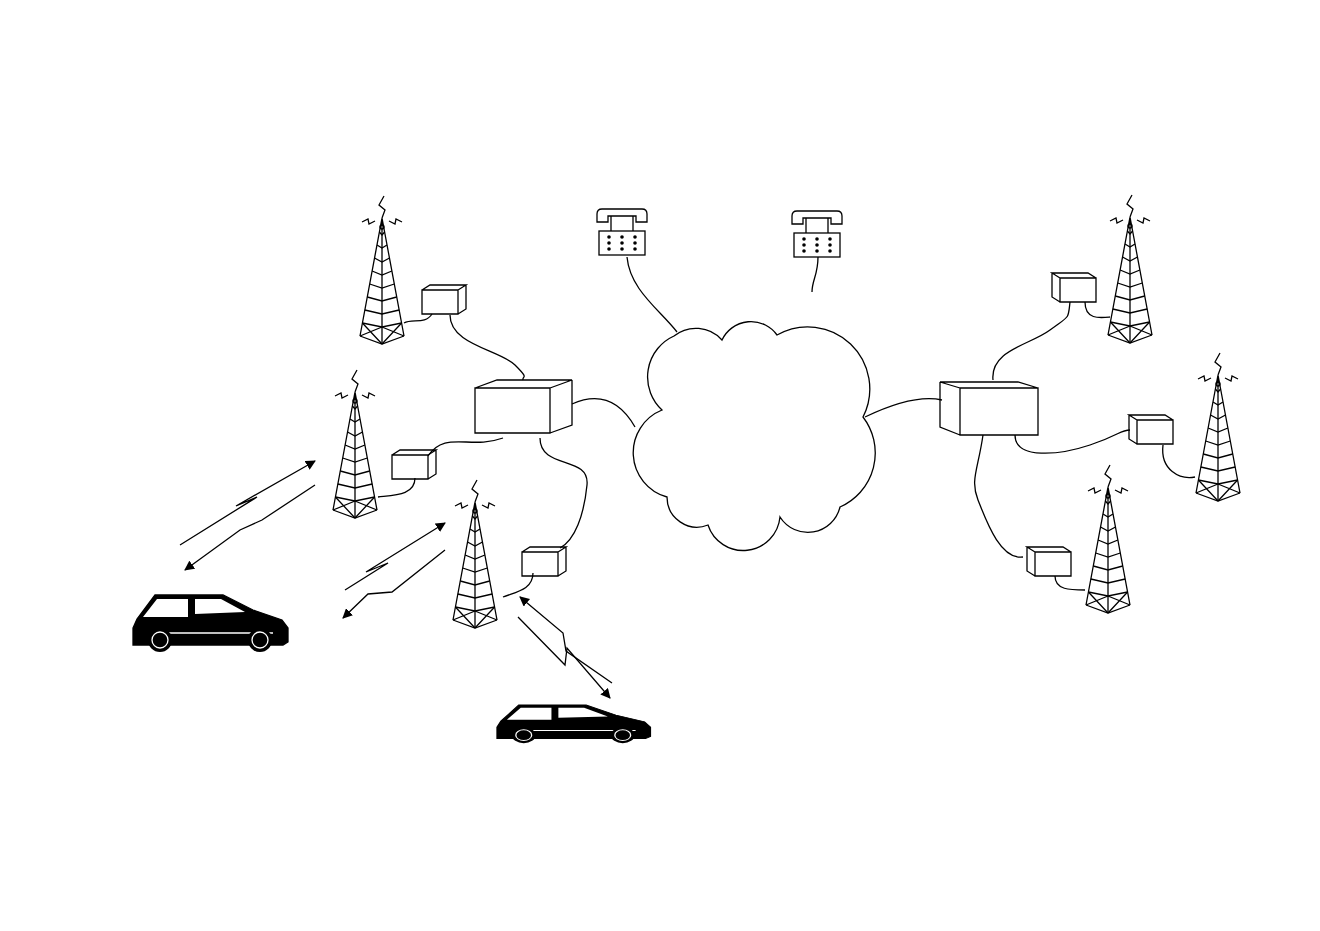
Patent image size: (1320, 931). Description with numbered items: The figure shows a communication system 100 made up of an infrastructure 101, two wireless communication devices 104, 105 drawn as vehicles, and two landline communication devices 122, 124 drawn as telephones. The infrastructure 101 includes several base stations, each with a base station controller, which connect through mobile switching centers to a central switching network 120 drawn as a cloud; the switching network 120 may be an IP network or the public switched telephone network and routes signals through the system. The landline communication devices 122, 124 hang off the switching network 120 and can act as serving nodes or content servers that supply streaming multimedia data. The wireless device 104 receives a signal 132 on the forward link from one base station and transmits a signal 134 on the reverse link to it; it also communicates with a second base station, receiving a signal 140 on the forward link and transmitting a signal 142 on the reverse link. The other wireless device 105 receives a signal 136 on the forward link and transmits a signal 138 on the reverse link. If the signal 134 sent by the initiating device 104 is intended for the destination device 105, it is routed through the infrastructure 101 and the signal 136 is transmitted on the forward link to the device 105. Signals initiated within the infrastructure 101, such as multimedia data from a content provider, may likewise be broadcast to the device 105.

The communication system 100 is at (1254, 170).
The infrastructure 101 is at (816, 614).
The wireless communication device 104 is at (280, 638).
The wireless communication device 105 is at (643, 733).
The switching network 120 is at (853, 322).
The landline communication device 122 is at (835, 216).
The landline communication device 124 is at (636, 215).
The forward link signal 132 is at (405, 577).
The reverse link signal 134 is at (408, 543).
The forward link signal 136 is at (585, 675).
The reverse link signal 138 is at (577, 643).
The receive signal 140 is at (270, 516).
The transmit signal 142 is at (283, 478).